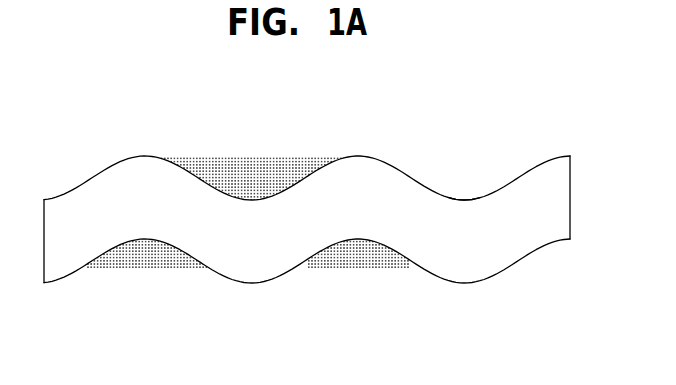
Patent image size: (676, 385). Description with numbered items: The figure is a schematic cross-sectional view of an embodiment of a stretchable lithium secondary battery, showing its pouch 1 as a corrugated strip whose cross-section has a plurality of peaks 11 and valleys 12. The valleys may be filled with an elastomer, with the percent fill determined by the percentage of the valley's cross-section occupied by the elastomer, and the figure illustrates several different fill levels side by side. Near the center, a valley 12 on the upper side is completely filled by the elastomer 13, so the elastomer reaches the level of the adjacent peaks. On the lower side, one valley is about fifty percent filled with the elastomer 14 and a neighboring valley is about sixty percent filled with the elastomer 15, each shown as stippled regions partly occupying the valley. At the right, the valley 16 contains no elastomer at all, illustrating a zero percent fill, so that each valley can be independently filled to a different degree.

The pouch 1 is at (307, 227).
The peak 11 is at (358, 156).
The valley 12 is at (251, 201).
The elastomer 13 is at (250, 158).
The elastomer 14 is at (152, 258).
The elastomer 15 is at (358, 262).
The valley 16 is at (464, 199).